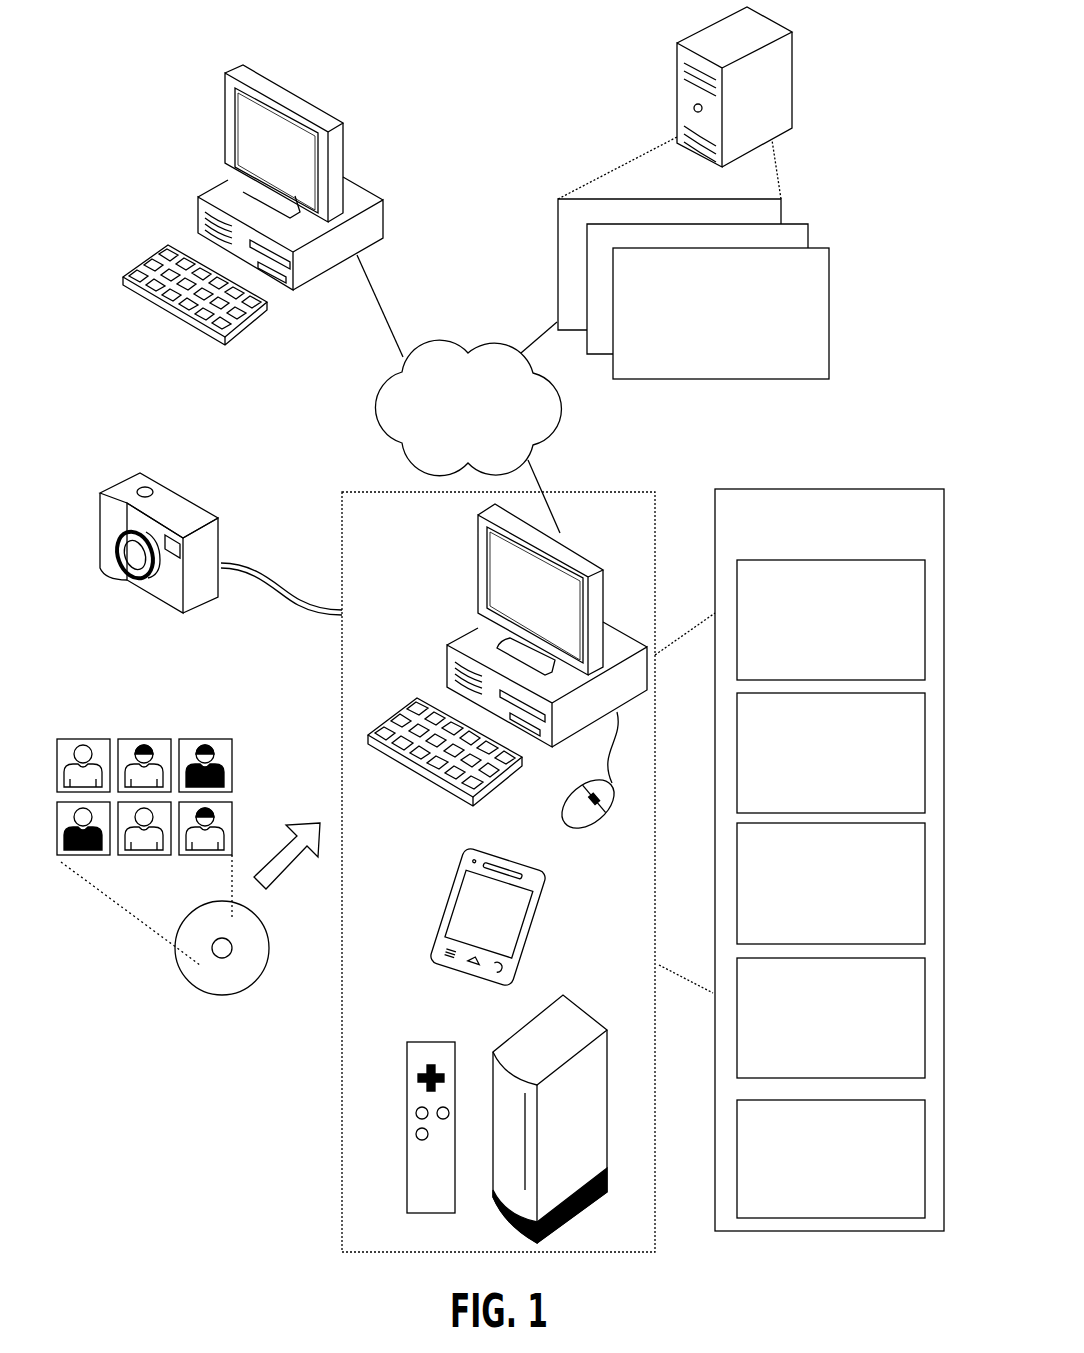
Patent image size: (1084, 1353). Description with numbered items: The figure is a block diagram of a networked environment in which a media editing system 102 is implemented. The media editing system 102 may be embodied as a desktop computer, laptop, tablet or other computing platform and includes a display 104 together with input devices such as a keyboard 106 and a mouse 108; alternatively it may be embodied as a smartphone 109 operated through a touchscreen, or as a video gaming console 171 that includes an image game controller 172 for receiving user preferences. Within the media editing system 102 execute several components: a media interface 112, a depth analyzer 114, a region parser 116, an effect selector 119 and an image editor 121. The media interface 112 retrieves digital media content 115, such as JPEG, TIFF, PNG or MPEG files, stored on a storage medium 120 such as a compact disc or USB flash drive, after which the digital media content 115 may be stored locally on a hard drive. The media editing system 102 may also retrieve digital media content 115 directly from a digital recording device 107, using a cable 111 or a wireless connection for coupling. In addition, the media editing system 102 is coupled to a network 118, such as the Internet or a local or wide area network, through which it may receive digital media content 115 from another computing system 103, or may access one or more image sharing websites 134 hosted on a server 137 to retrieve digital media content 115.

The media editing system 102 is at (887, 550).
The computing system 103 is at (225, 97).
The display 104 is at (478, 567).
The keyboard 106 is at (428, 776).
The digital recording device 107 is at (121, 480).
The mouse 108 is at (565, 818).
The smartphone 109 is at (455, 875).
The cable 111 is at (250, 568).
The media interface 112 is at (845, 659).
The depth analyzer 114 is at (845, 794).
The digital media content 115 is at (130, 710).
The region parser 116 is at (845, 910).
The network 118 is at (482, 434).
The effect selector 119 is at (845, 1059).
The storage medium 120 is at (272, 947).
The image editor 121 is at (845, 1185).
The image sharing websites 134 is at (736, 354).
The server 137 is at (703, 30).
The video gaming console 171 is at (519, 1032).
The image game controller 172 is at (407, 1063).